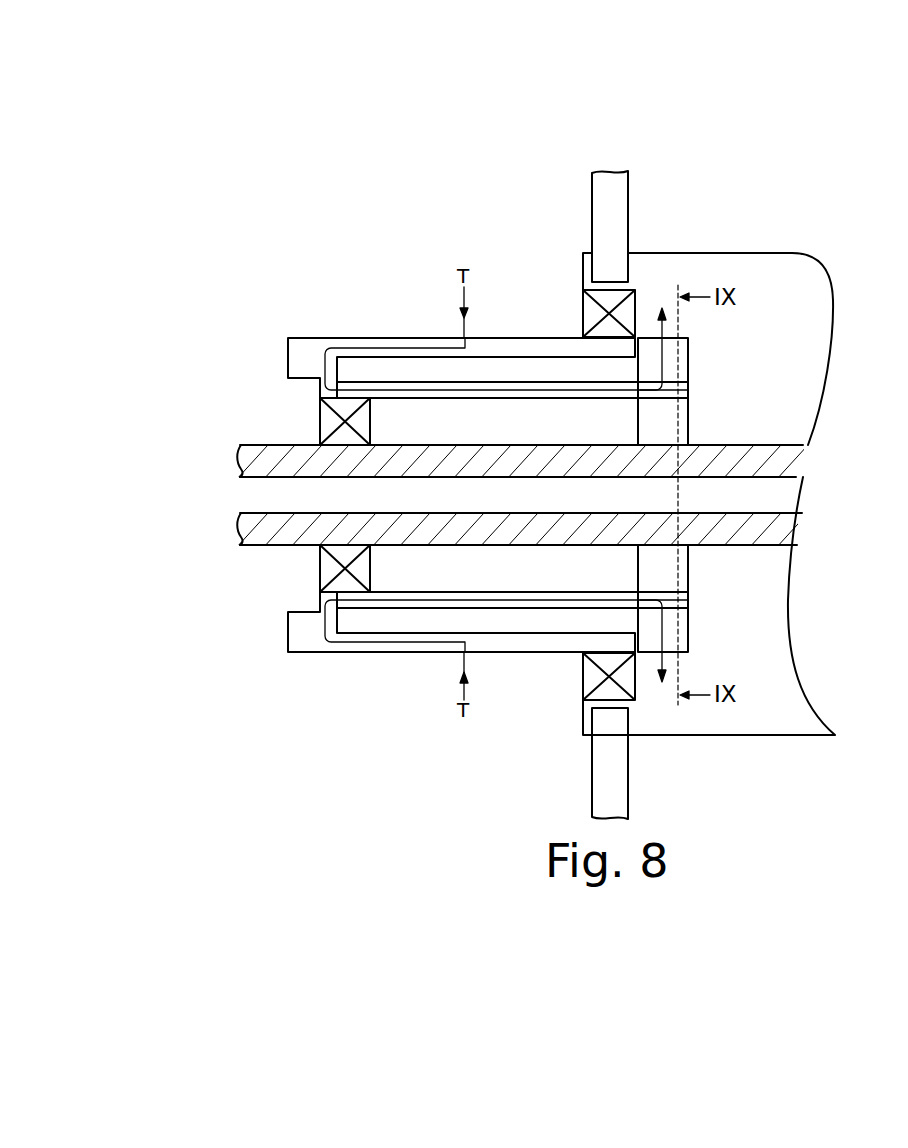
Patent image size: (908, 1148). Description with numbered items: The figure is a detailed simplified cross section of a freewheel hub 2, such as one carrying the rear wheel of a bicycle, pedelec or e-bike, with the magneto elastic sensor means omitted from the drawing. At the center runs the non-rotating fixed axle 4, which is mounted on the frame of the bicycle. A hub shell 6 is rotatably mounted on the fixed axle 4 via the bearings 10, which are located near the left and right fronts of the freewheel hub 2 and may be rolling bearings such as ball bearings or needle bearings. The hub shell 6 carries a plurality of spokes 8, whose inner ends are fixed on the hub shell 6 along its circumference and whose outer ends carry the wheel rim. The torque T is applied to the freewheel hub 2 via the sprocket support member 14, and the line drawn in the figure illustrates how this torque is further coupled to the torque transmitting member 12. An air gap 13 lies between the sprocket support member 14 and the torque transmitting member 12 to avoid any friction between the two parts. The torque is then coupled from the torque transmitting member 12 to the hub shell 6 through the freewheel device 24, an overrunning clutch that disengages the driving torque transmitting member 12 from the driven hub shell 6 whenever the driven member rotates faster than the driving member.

The freewheel hub 2 is at (743, 143).
The fixed axle 4 is at (803, 445).
The hub shell 6 is at (768, 253).
The spokes 8 is at (628, 192).
The bearings 10 is at (320, 425).
The torque transmitting member 12 is at (688, 390).
The air gap 13 is at (352, 373).
The sprocket support member 14 is at (310, 337).
The freewheel device 24 is at (688, 352).